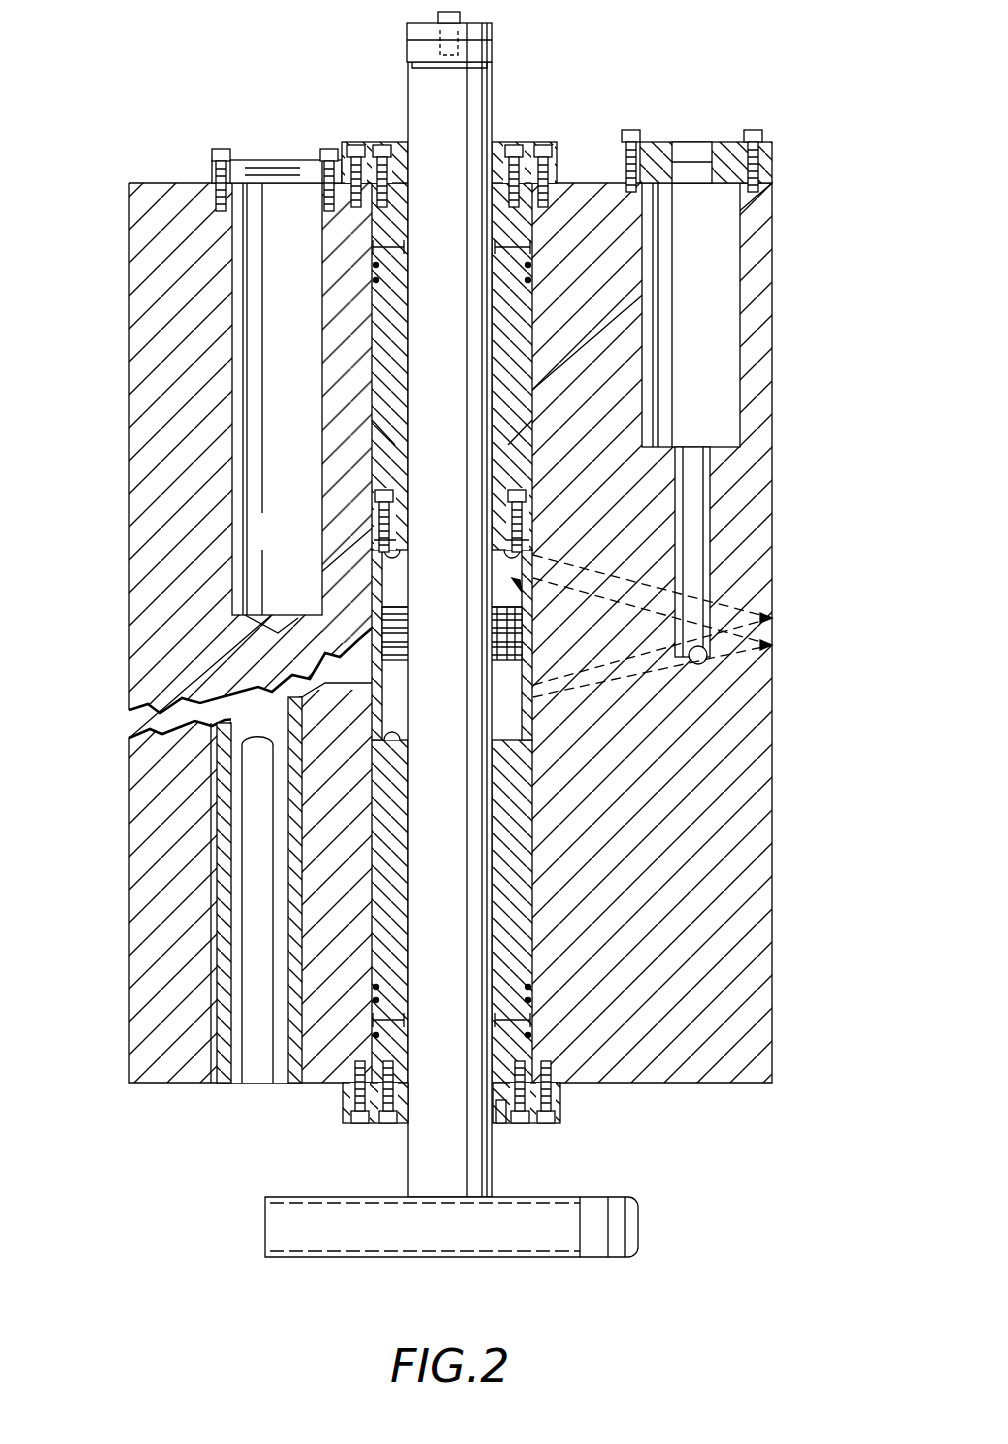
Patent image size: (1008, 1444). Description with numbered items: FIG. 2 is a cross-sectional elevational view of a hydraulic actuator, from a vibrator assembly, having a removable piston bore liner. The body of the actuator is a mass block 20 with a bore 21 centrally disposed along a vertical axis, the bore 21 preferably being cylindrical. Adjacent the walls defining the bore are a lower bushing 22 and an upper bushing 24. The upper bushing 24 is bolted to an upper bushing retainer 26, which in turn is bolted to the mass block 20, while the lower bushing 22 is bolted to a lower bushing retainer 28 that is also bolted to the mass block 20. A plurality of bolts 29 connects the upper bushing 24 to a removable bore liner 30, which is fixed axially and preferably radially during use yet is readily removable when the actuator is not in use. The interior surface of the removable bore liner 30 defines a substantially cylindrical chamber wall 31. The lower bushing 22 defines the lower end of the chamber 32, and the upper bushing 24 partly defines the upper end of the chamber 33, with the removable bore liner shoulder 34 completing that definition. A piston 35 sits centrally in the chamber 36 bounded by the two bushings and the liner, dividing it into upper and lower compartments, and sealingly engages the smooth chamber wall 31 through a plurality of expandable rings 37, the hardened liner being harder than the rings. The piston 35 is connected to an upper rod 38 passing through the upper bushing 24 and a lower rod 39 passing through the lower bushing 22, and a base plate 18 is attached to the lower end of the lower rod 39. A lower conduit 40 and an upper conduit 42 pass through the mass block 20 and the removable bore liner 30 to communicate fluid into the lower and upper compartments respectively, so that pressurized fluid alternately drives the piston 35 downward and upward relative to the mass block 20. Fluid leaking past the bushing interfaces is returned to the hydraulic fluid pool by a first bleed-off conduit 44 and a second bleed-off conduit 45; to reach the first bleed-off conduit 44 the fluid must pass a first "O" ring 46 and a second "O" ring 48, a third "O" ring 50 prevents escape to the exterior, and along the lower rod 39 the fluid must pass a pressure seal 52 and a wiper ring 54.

The base plate 18 is at (258, 1254).
The mass block 20 is at (146, 176).
The bore 21 is at (422, 97).
The lower bushing 22 is at (372, 862).
The upper bushing 24 is at (532, 365).
The upper bushing retainer 26 is at (532, 140).
The lower bushing retainer 28 is at (345, 1105).
The bolts 29 is at (375, 490).
The removable bore liner 30 is at (376, 662).
The chamber wall 31 is at (535, 697).
The lower end of the chamber 32 is at (372, 727).
The upper end of the chamber 33 is at (378, 542).
The removable bore liner shoulder 34 is at (512, 585).
The piston 35 is at (384, 603).
The chamber 36 is at (517, 580).
The expandable rings 37 is at (372, 610).
The upper rod 38 is at (497, 328).
The lower rod 39 is at (500, 862).
The lower conduit 40 is at (533, 648).
The upper conduit 42 is at (533, 628).
The first bleed-off conduit 44 is at (530, 1017).
The second bleed-off conduit 45 is at (497, 244).
The first "O" ring 46 is at (530, 987).
The second "O" ring 48 is at (530, 1000).
The third "O" ring 50 is at (545, 1037).
The pressure seal 52 is at (560, 1117).
The wiper ring 54 is at (503, 1123).